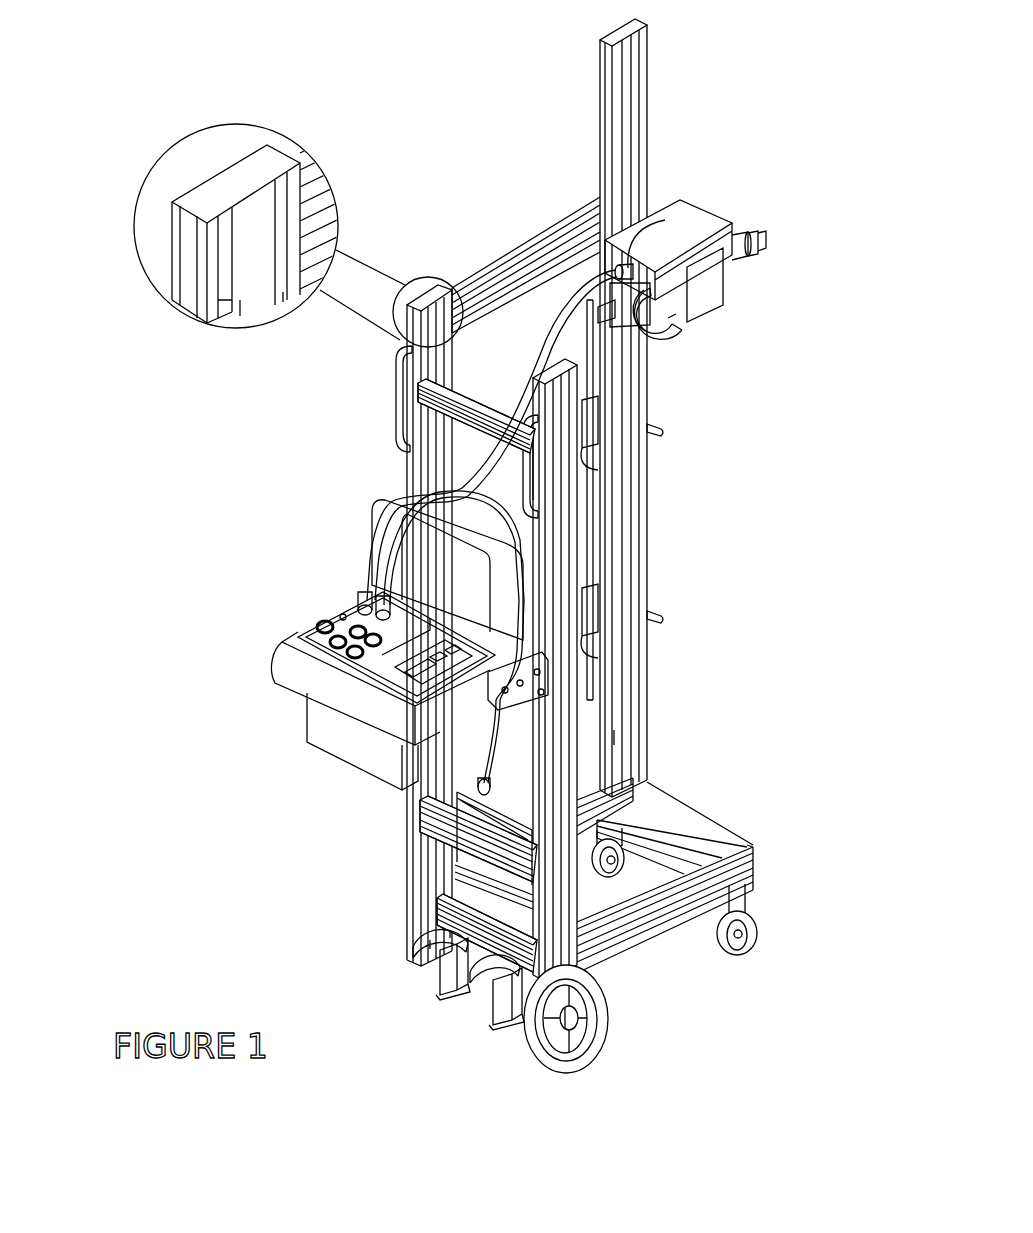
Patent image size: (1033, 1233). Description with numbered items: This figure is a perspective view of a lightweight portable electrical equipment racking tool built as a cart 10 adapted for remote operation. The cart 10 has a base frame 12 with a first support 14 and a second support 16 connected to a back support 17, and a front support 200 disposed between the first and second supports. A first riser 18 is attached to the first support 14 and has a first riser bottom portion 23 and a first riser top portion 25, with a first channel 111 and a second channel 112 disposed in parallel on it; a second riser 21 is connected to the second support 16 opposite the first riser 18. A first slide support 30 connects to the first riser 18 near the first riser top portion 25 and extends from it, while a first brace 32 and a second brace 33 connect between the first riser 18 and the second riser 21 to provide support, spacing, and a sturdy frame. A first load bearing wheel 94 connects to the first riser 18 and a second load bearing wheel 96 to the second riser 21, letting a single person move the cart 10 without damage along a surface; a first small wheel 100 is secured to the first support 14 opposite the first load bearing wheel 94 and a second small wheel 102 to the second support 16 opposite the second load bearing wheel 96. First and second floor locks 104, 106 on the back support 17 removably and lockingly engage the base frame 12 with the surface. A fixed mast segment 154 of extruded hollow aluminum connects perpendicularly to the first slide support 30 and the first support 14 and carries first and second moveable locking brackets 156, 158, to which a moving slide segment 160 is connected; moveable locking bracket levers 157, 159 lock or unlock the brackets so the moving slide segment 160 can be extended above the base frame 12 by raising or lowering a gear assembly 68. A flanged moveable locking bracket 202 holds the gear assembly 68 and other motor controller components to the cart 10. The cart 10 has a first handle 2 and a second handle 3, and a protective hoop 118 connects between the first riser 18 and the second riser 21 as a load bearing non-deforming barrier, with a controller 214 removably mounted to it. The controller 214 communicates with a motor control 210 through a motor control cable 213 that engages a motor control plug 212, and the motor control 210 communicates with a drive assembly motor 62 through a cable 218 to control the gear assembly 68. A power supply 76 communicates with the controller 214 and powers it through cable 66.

The cart 10 is at (358, 90).
The base frame 12 is at (727, 746).
The first support 14 is at (634, 800).
The second support 16 is at (758, 866).
The back support 17 is at (440, 912).
The first riser 18 is at (229, 185).
The first handle 2 is at (398, 393).
The second handle 3 is at (522, 494).
The second riser 21 is at (552, 375).
The first riser bottom portion 23 is at (398, 926).
The first riser top portion 25 is at (160, 243).
The first slide support 30 is at (512, 246).
The first brace 32 is at (490, 413).
The second brace 33 is at (440, 841).
The drive assembly motor 62 is at (690, 316).
The cable 66 is at (492, 736).
The gear assembly 68 is at (727, 300).
The power supply 76 is at (487, 792).
The first load bearing wheel 94 is at (406, 950).
The second load bearing wheel 96 is at (586, 1060).
The first small wheel 100 is at (610, 880).
The second small wheel 102 is at (744, 951).
The first floor lock 104 is at (446, 986).
The second floor lock 106 is at (498, 1018).
The first channel 111 is at (232, 317).
The second channel 112 is at (292, 302).
The protective hoop 118 is at (282, 686).
The fixed mast segment 154 is at (618, 736).
The first moveable locking bracket 156 is at (602, 640).
The moveable locking bracket lever 157 is at (657, 625).
The second moveable locking bracket 158 is at (600, 457).
The moveable locking bracket lever 159 is at (657, 438).
The moving slide segment 160 is at (630, 60).
The front support 200 is at (674, 840).
The flanged moveable locking bracket 202 is at (594, 315).
The motor control 210 is at (702, 214).
The motor control plug 212 is at (628, 240).
The motor control cable 213 is at (536, 363).
The controller 214 is at (307, 622).
The cable 218 is at (672, 333).